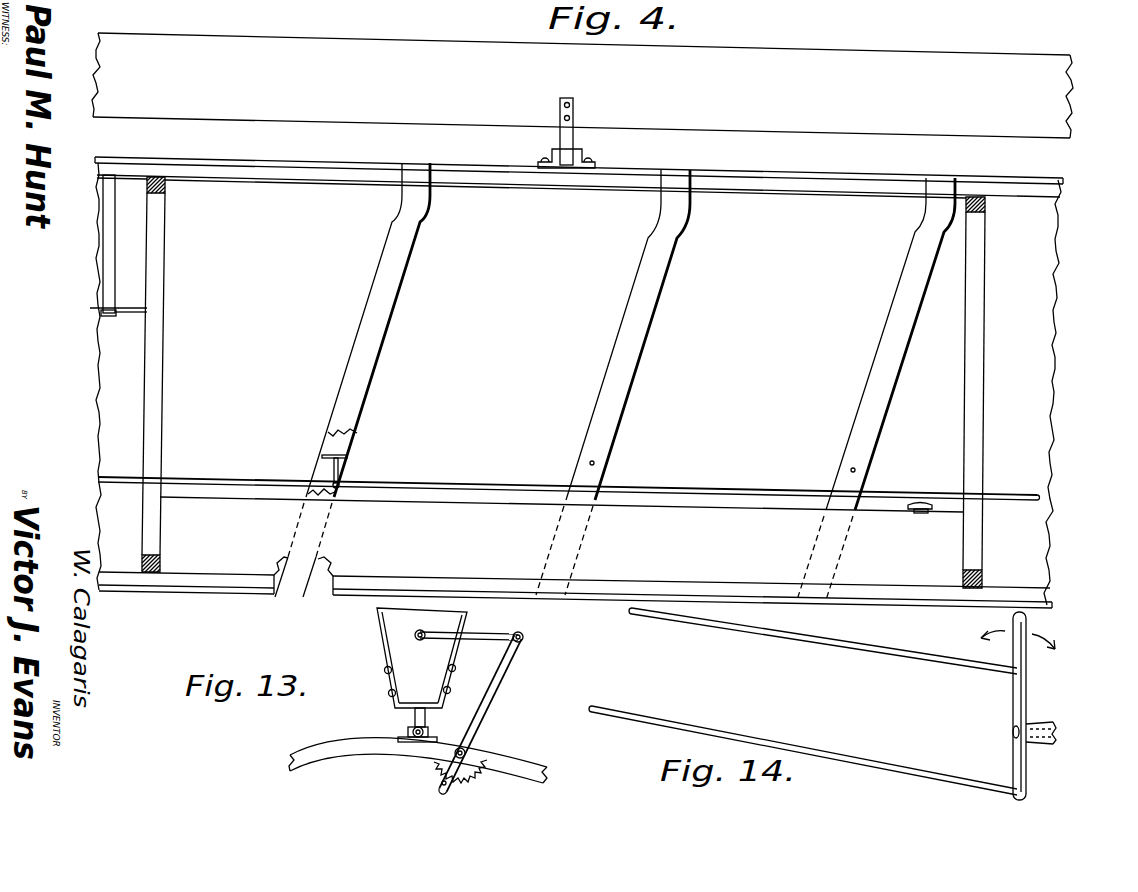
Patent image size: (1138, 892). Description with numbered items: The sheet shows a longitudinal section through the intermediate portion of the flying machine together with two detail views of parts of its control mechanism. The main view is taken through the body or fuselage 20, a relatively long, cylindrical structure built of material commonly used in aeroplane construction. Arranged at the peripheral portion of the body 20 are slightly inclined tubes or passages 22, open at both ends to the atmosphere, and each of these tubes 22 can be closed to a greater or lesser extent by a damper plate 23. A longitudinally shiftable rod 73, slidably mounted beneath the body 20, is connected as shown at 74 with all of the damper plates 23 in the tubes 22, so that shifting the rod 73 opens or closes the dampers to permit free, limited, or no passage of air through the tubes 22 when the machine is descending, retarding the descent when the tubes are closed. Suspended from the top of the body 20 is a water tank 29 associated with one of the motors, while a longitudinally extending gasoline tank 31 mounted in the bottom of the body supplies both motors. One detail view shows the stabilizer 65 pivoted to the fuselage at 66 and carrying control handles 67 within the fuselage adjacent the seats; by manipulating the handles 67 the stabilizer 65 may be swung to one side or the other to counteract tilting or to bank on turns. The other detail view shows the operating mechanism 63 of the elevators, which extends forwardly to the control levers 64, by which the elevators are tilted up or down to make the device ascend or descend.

In FIG. 4, the body or fuselage 20 is at (1060, 327).
In FIG. 13, the body or fuselage 20 is at (295, 755).
In FIG. 4, the inclined tubes or passages 22 is at (627, 356).
In FIG. 4, the damper plates 23 is at (326, 447).
In FIG. 4, the water tank 29 is at (94, 273).
In FIG. 4, the gasoline tank 31 is at (676, 515).
In FIG. 14, the operating mechanism 63 is at (777, 634).
In FIG. 14, the control levers 64 is at (1022, 698).
In FIG. 4, the stabilizer 65 is at (922, 62).
In FIG. 13, the stabilizer 65 is at (392, 632).
In FIG. 4, the stabilizer pivot 66 is at (563, 147).
In FIG. 13, the stabilizer pivot 66 is at (413, 725).
In FIG. 13, the control handles 67 is at (495, 686).
In FIG. 4, the longitudinally shiftable rod 73 is at (900, 495).
In FIG. 4, the rod-to-damper connection 74 is at (347, 469).